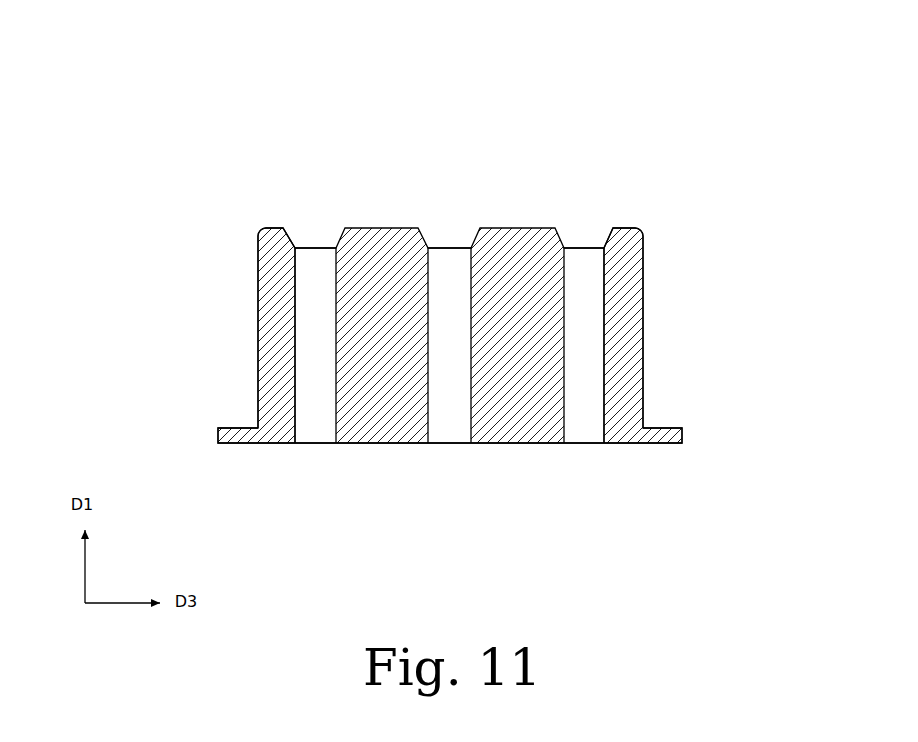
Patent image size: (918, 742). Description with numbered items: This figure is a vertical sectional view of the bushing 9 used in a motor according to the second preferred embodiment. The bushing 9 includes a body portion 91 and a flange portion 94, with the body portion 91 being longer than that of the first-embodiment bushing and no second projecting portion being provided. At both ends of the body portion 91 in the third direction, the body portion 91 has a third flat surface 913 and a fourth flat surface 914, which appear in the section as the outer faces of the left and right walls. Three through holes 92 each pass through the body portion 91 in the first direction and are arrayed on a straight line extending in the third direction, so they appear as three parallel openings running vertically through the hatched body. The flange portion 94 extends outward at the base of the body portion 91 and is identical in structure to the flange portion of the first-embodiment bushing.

The bushing 9 is at (522, 192).
The body portion 91 is at (634, 227).
The third flat surface 913 is at (257, 322).
The fourth flat surface 914 is at (644, 323).
The through hole 92 is at (318, 432).
The flange portion 94 is at (683, 433).